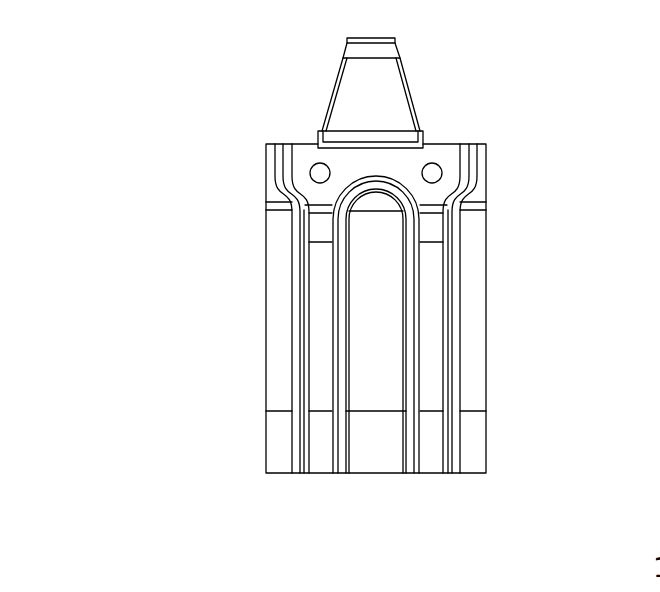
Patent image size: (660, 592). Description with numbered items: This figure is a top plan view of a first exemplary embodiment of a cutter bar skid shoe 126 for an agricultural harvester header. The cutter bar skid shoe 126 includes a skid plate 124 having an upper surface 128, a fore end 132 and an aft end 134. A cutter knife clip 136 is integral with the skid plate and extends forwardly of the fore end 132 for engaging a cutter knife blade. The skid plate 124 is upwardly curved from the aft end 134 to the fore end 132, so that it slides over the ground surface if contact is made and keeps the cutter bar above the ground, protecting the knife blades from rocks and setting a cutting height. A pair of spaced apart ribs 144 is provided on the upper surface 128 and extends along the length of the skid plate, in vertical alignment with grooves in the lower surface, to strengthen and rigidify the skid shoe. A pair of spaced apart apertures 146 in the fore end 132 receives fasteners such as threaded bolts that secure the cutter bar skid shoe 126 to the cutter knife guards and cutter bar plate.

The cutter bar skid shoe 126 is at (552, 260).
The fore end 132 is at (249, 159).
The skid plate 124 is at (500, 364).
The aft end 134 is at (500, 449).
The rib 144 is at (300, 342).
The upper surface 128 is at (383, 448).
The apertures 146 is at (320, 173).
The cutter knife clip 136 is at (422, 78).